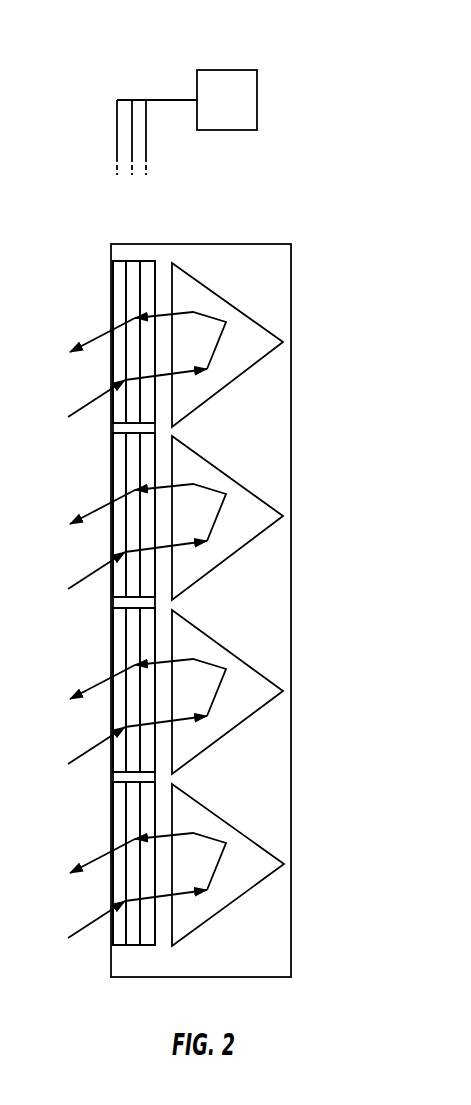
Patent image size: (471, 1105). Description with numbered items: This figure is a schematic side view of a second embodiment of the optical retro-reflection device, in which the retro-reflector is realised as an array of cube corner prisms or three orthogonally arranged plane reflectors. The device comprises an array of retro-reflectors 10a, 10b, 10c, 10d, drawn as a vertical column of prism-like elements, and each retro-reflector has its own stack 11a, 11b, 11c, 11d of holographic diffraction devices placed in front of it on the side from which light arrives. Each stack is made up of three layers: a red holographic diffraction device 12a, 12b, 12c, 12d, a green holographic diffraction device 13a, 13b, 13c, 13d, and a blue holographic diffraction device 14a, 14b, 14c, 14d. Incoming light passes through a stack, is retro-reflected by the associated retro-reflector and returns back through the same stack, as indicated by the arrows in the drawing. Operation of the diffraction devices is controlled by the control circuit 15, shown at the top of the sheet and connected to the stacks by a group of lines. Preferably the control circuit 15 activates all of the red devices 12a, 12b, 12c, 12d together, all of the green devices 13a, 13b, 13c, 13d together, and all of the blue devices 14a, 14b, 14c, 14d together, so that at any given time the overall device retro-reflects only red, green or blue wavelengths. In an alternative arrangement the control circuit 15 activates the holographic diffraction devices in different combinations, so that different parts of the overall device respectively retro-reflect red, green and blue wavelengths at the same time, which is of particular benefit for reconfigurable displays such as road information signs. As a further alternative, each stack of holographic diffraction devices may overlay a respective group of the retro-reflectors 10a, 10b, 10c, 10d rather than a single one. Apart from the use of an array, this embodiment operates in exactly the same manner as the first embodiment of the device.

The control circuit 15 is at (225, 70).
The retro-reflector 10a is at (268, 325).
The retro-reflector 10b is at (268, 500).
The retro-reflector 10c is at (268, 675).
The retro-reflector 10d is at (268, 850).
The stack of holographic diffraction devices 11a is at (98, 290).
The stack of holographic diffraction devices 11b is at (100, 490).
The stack of holographic diffraction devices 11c is at (98, 665).
The stack of holographic diffraction devices 11d is at (98, 845).
The red holographic diffraction device 12a is at (113, 258).
The red holographic diffraction device 12b is at (118, 458).
The red holographic diffraction device 12c is at (118, 633).
The red holographic diffraction device 12d is at (118, 808).
The green holographic diffraction device 13a is at (132, 260).
The green holographic diffraction device 13b is at (132, 480).
The green holographic diffraction device 13c is at (132, 655).
The green holographic diffraction device 13d is at (132, 828).
The blue holographic diffraction device 14a is at (150, 260).
The blue holographic diffraction device 14b is at (148, 485).
The blue holographic diffraction device 14c is at (148, 660).
The blue holographic diffraction device 14d is at (148, 834).